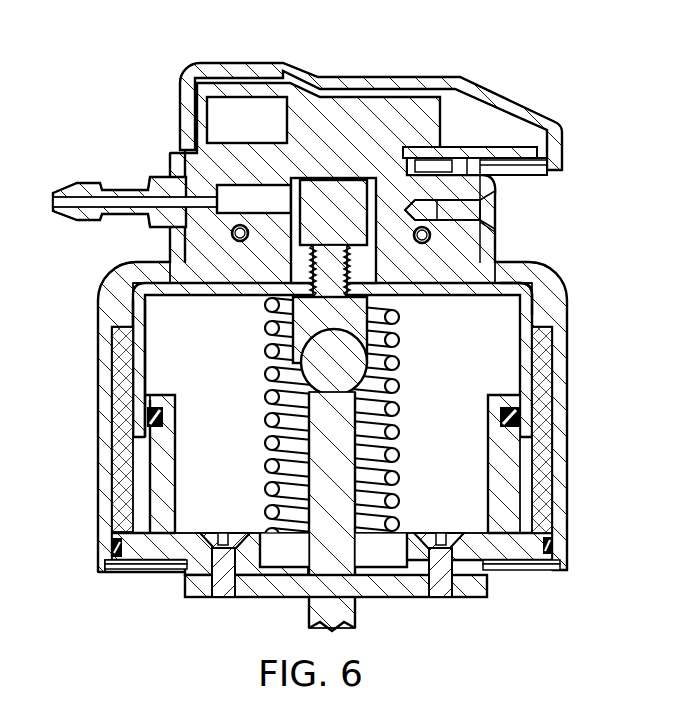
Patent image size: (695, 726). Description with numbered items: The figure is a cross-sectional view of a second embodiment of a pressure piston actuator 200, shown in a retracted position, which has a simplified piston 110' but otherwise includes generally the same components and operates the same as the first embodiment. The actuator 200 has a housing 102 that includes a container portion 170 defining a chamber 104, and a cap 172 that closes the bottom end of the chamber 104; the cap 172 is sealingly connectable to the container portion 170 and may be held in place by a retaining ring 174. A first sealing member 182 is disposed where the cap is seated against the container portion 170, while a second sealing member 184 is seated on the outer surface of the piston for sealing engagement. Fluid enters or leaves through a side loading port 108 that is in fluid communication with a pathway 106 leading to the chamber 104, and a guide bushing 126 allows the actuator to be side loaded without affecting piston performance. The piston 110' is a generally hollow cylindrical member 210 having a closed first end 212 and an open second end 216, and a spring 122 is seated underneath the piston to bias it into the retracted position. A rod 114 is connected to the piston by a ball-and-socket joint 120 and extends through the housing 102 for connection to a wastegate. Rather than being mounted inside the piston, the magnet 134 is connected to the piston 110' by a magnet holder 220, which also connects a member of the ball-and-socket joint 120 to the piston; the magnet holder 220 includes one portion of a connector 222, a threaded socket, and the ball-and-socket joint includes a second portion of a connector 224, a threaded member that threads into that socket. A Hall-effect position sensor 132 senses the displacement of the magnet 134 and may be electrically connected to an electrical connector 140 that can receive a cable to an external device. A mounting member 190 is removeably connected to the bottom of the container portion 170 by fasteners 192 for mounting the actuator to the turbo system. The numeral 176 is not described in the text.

The housing 102 is at (575, 413).
The chamber 104 is at (117, 493).
The pathway 106 is at (243, 192).
The port 108 is at (80, 186).
The piston 110' is at (96, 368).
The rod 114 is at (350, 615).
The ball-and-socket joint 120 is at (294, 344).
The spring 122 is at (398, 478).
The guide bushing 126 is at (114, 396).
The position sensor 132 is at (441, 162).
The magnet 134 is at (333, 192).
The electrical connector 140 is at (218, 127).
The container portion 170 is at (561, 308).
The cap 172 is at (511, 553).
The retaining ring 174 is at (540, 568).
The cap 176 is at (208, 64).
The first sealing member 182 is at (552, 547).
The second sealing member 184 is at (505, 414).
The mounting member 190 is at (193, 598).
The fasteners 192 is at (446, 592).
The pressure piston actuator 200 is at (499, 77).
The hollow cylindrical member 210 is at (522, 370).
The closed first end 212 is at (530, 294).
The open second end 216 is at (137, 427).
The magnet holder 220 is at (312, 256).
The connector 222 is at (348, 260).
The connector 224 is at (368, 304).